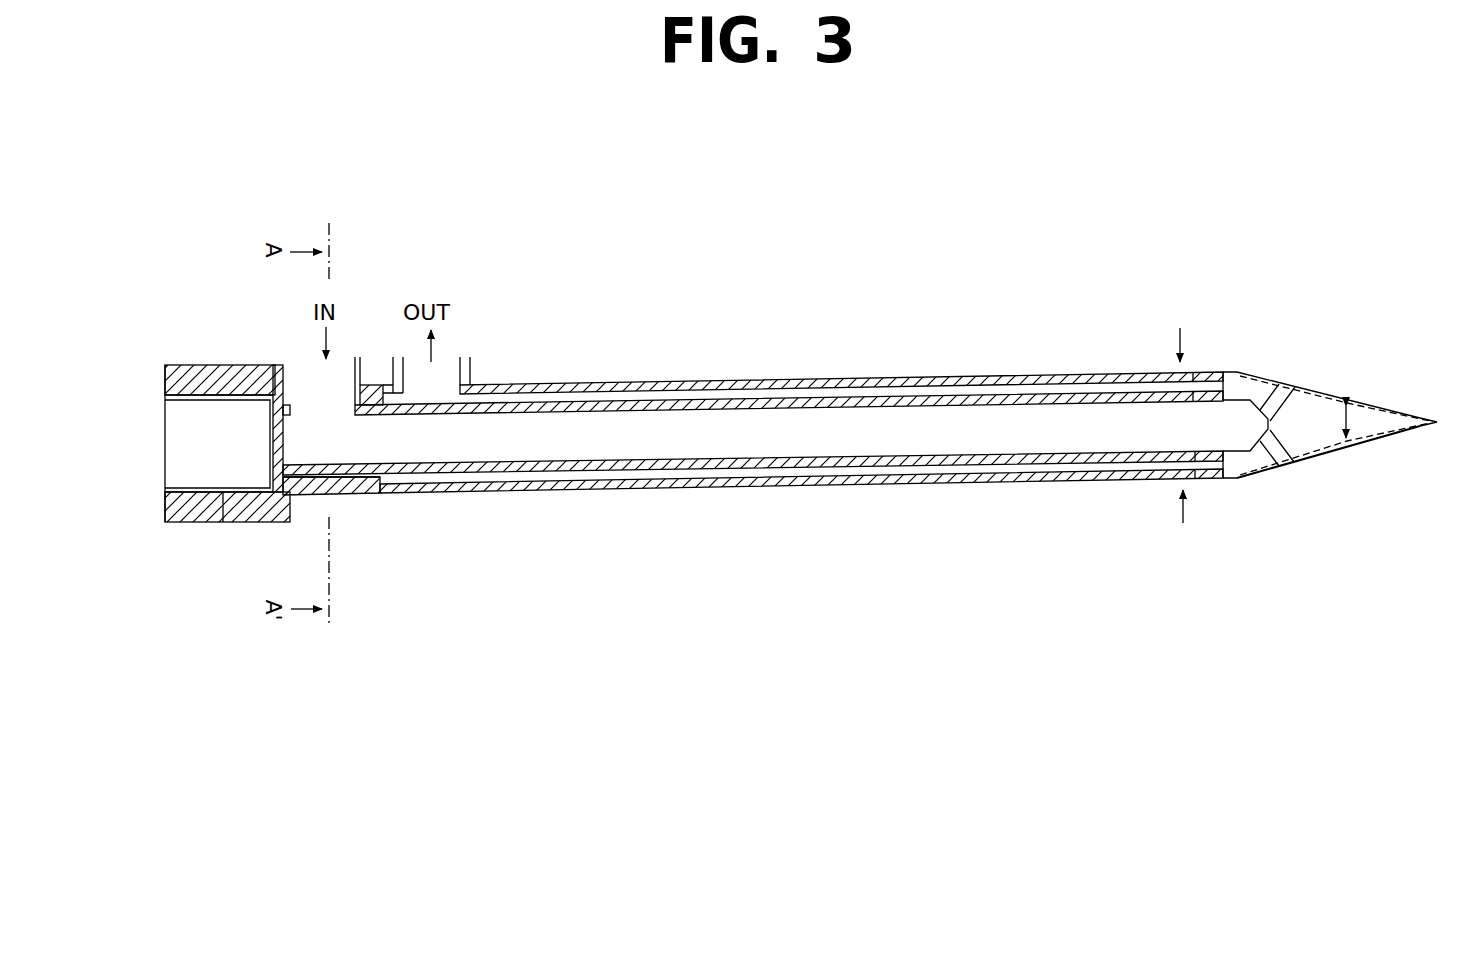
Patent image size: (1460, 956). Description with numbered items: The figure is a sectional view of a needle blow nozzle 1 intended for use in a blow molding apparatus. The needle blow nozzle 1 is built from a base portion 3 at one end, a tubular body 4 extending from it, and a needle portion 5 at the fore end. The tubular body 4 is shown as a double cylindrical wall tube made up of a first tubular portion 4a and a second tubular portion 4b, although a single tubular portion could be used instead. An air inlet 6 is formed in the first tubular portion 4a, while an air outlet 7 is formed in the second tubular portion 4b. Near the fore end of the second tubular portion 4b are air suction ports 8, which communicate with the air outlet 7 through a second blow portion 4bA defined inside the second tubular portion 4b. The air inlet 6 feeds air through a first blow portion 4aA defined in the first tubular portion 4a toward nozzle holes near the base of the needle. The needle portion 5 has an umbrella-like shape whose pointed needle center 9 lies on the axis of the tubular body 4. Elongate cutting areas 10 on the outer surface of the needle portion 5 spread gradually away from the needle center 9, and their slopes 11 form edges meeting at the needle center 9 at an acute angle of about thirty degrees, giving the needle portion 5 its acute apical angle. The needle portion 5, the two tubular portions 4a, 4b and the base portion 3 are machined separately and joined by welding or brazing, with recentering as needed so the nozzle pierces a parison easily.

The needle blow nozzle 1 is at (846, 347).
The base portion 3 is at (247, 513).
The tubular body 4 is at (777, 488).
The first tubular portion 4a is at (628, 404).
The first blow portion 4aA is at (548, 458).
The second tubular portion 4b is at (775, 383).
The second blow portion 4bA is at (970, 382).
The needle portion 5 is at (1302, 462).
The air inlet 6 is at (344, 342).
The air outlet 7 is at (453, 340).
The air suction ports 8 is at (1173, 371).
The needle center 9 is at (1438, 419).
The elongate cutting areas 10 is at (1324, 406).
The slopes 11 is at (1317, 391).